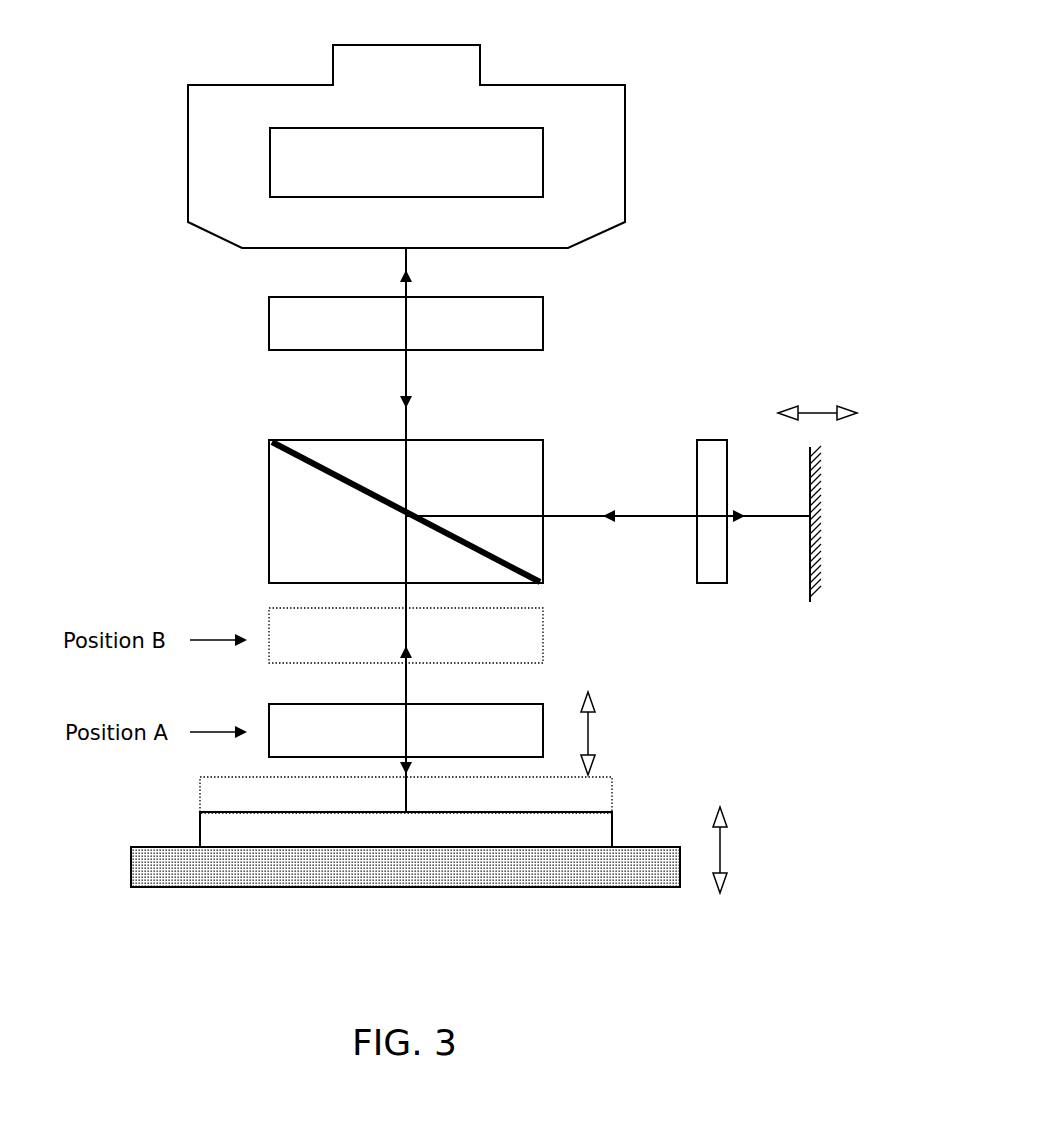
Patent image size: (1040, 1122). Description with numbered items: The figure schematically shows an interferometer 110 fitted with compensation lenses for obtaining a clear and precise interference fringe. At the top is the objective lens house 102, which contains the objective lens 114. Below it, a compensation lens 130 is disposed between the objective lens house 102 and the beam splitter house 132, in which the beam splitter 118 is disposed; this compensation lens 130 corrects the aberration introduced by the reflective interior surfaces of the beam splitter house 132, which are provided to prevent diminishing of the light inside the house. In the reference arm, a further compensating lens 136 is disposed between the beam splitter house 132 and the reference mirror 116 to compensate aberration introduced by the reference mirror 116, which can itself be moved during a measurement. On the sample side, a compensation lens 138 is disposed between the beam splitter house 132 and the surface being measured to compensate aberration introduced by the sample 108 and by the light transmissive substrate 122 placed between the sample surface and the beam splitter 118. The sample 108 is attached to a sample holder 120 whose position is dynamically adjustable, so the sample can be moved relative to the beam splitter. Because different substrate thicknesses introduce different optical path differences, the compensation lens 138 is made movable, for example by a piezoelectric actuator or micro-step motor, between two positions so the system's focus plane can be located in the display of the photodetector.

The interferometer 110 is at (160, 94).
The objective lens house 102 is at (625, 123).
The objective lens 114 is at (406, 162).
The compensation lens 130 is at (543, 313).
The beam splitter house 132 is at (543, 447).
The beam splitter 118 is at (307, 462).
The compensating lens 136 is at (718, 585).
The reference mirror 116 is at (820, 490).
The compensation lens 138 is at (543, 705).
The light transmissive substrate 122 is at (200, 793).
The sample 108 is at (612, 818).
The sample holder 120 is at (612, 887).